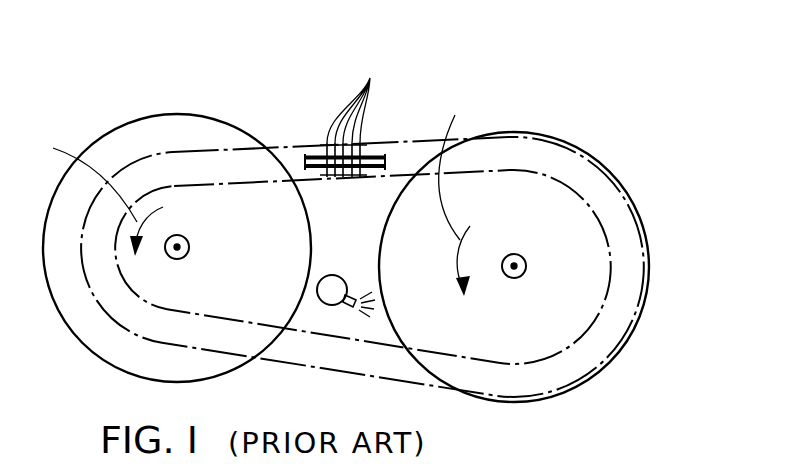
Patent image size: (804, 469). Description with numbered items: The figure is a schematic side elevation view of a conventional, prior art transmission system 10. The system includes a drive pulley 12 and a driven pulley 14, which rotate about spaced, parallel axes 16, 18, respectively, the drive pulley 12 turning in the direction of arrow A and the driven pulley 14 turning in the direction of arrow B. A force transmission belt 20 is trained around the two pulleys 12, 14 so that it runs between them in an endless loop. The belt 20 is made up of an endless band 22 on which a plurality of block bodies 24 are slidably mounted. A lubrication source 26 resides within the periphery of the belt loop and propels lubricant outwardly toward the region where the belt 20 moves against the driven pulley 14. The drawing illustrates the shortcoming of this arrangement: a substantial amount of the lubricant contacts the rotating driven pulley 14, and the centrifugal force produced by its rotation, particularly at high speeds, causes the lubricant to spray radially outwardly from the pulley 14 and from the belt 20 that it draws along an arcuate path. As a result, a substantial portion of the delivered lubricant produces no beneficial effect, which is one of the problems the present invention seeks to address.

The transmission system 10 is at (527, 92).
The drive pulley 12 is at (147, 127).
The driven pulley 14 is at (532, 132).
The axis 16 is at (184, 235).
The axis 18 is at (522, 255).
The force transmission belt 20 is at (402, 178).
The endless band 22 is at (313, 144).
The block bodies 24 is at (359, 99).
The lubrication source 26 is at (320, 303).
The arrow A is at (98, 196).
The arrow B is at (454, 193).